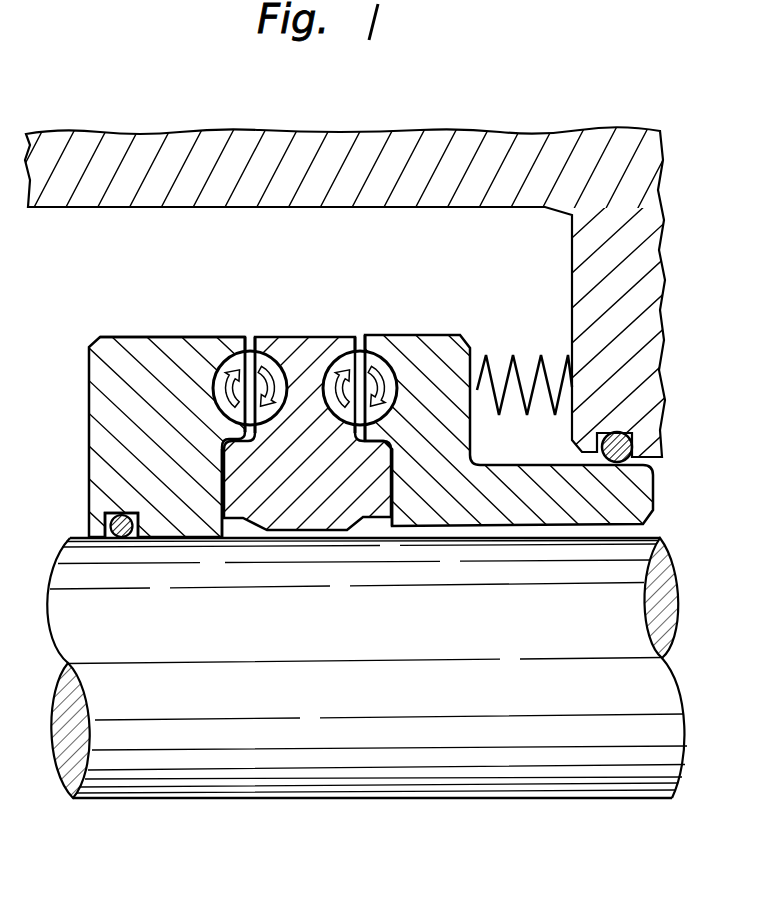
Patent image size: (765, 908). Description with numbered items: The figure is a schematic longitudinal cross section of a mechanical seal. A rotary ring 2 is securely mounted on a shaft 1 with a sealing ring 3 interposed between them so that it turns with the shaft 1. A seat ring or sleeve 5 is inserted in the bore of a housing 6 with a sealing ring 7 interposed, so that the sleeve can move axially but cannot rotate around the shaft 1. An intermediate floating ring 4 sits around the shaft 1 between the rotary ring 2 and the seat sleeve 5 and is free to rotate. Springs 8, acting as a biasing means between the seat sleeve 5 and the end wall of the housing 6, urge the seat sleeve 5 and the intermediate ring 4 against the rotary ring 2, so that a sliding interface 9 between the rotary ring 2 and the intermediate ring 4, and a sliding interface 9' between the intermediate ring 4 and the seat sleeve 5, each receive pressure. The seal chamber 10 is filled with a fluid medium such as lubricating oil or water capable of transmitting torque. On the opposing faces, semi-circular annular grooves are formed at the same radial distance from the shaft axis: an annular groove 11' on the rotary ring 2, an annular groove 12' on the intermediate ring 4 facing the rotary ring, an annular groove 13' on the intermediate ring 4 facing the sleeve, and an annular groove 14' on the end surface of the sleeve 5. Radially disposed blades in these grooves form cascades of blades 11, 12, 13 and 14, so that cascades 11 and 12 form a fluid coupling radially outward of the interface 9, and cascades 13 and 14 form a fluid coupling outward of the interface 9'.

The shaft 1 is at (520, 775).
The rotary ring 2 is at (180, 503).
The sealing ring 3 is at (105, 522).
The intermediate floating ring 4 is at (287, 495).
The seat ring or sleeve 5 is at (483, 497).
The housing 6 is at (557, 143).
The sealing ring 7 is at (620, 468).
The springs 8 is at (503, 355).
The sliding interface 9 is at (138, 477).
The sliding interface 9' is at (418, 537).
The seal chamber 10 is at (93, 259).
The cascade of blades 11 is at (203, 338).
The annular groove 11' is at (172, 312).
The cascade of blades 12 is at (247, 352).
The annular groove 12' is at (261, 324).
The cascade of blades 13 is at (337, 353).
The annular groove 13' is at (286, 354).
The cascade of blades 14 is at (364, 349).
The annular groove 14' is at (418, 356).